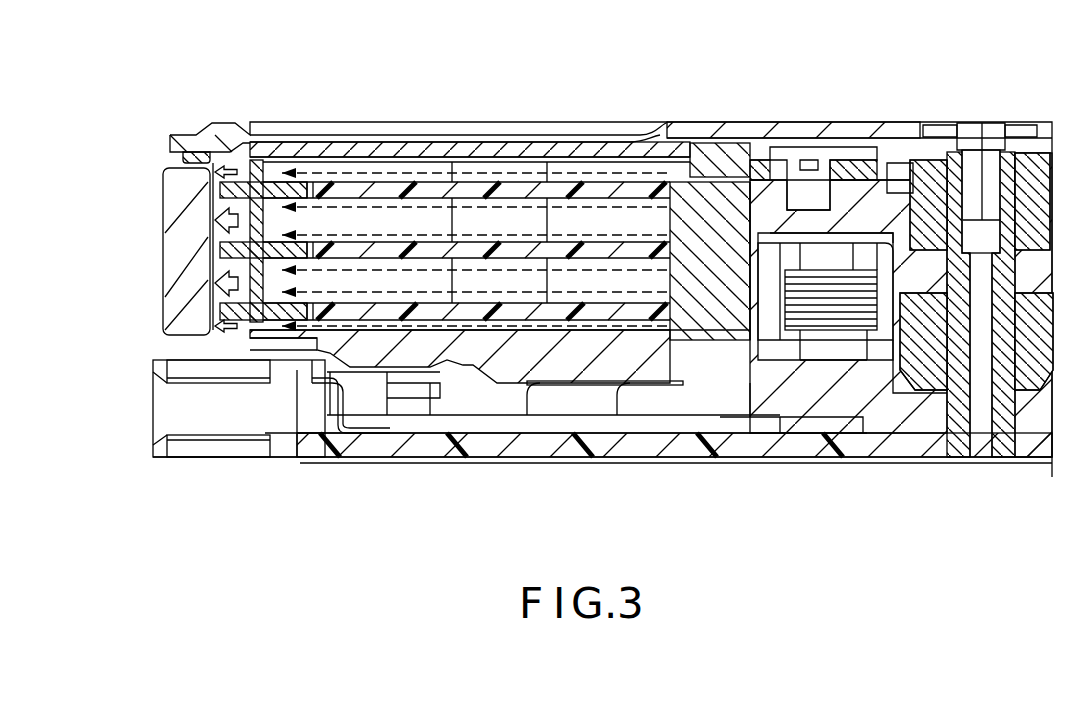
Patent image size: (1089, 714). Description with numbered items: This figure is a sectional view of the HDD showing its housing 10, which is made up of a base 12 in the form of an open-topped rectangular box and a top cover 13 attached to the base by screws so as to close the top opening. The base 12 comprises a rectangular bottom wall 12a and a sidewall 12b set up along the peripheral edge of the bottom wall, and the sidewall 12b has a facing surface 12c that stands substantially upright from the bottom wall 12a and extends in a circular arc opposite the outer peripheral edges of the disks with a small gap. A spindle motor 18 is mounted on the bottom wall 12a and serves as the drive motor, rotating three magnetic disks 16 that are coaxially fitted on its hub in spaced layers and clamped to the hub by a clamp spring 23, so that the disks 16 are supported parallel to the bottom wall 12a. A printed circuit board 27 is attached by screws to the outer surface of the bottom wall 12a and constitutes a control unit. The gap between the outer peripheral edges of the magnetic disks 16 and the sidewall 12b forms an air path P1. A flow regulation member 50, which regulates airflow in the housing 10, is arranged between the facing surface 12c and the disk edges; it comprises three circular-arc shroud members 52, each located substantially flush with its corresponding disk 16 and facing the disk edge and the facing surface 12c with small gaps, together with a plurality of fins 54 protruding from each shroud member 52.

The housing 10 is at (509, 121).
The base 12 is at (578, 389).
The bottom wall 12a is at (650, 356).
The sidewall 12b is at (170, 262).
The facing surface 12c is at (215, 275).
The top cover 13 is at (675, 132).
The magnetic disk 16 is at (358, 190).
The spindle motor 18 is at (860, 211).
The clamp spring 23 is at (757, 148).
The printed circuit board 27 is at (745, 450).
The flow regulation member 50 is at (211, 191).
The shroud member 52 is at (287, 182).
The fin 54 is at (258, 162).
The air path P1 is at (218, 230).